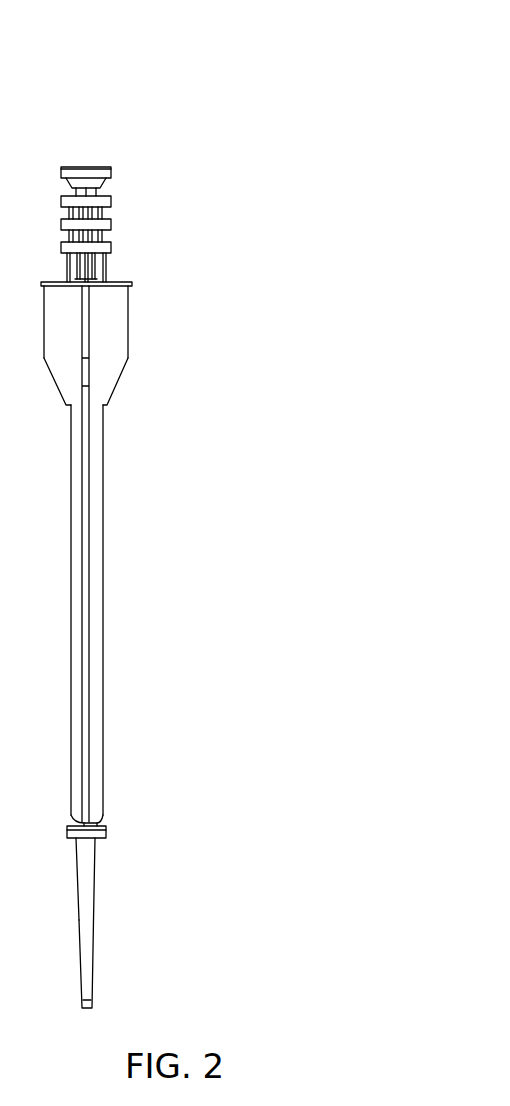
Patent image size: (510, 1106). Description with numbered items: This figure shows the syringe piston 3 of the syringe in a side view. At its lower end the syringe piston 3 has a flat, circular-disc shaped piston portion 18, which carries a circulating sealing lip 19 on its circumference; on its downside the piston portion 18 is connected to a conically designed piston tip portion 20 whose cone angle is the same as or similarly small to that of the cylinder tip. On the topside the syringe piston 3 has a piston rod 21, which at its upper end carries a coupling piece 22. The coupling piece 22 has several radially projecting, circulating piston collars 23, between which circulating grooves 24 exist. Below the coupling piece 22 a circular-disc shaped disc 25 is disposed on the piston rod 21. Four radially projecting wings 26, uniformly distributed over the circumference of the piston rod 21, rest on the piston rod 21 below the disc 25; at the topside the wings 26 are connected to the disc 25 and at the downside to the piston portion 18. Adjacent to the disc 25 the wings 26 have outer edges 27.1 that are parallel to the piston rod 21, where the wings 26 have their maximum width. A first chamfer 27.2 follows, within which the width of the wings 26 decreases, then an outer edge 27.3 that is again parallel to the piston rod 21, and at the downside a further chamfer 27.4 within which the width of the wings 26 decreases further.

The syringe piston 3 is at (117, 645).
The piston portion 18 is at (106, 829).
The sealing lip 19 is at (100, 840).
The piston tip portion 20 is at (90, 958).
The piston rod 21 is at (83, 565).
The coupling piece 22 is at (105, 187).
The piston collars 23 is at (112, 200).
The circulating grooves 24 is at (112, 214).
The disc 25 is at (128, 284).
The wings 26 is at (149, 360).
The outer edges 27.1 is at (129, 318).
The first chamfer 27.2 is at (127, 381).
The outer edge 27.3 is at (103, 706).
The further chamfer 27.4 is at (100, 824).